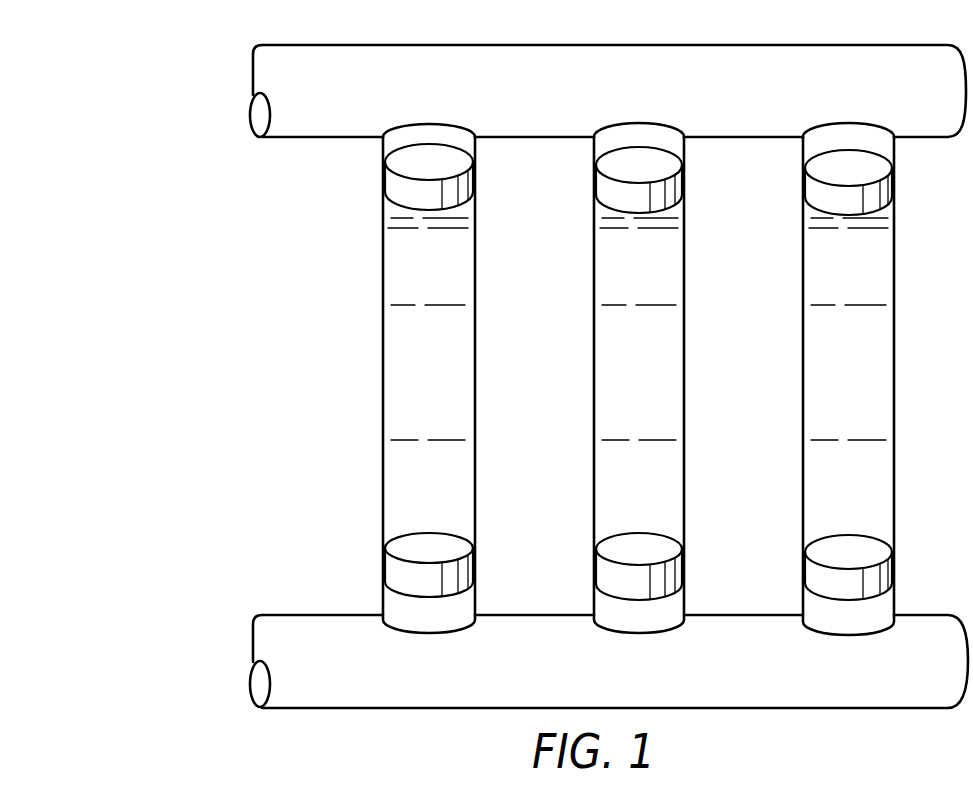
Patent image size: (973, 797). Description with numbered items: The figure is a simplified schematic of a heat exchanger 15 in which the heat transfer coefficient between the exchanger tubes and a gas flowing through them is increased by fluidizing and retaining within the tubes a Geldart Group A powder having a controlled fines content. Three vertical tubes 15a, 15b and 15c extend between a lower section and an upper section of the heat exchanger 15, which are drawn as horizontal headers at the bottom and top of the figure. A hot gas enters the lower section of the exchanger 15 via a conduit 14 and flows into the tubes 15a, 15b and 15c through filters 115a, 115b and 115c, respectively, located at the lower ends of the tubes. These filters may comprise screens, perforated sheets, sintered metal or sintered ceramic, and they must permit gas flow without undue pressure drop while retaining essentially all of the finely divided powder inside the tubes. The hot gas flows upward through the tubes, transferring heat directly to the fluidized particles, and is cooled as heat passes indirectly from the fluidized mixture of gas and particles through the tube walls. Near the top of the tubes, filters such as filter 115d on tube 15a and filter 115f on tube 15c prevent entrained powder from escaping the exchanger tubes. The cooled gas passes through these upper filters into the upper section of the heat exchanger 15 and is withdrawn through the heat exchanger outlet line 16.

The conduit 14 is at (252, 661).
The heat exchanger outlet line 16 is at (250, 92).
The heat exchanger 15 is at (581, 679).
The tube 15a is at (446, 379).
The tube 15b is at (656, 379).
The tube 15c is at (866, 379).
The filter 115a is at (374, 579).
The filter 115b is at (588, 574).
The filter 115c is at (586, 191).
The filter 115d is at (372, 188).
The filter 115f is at (792, 191).